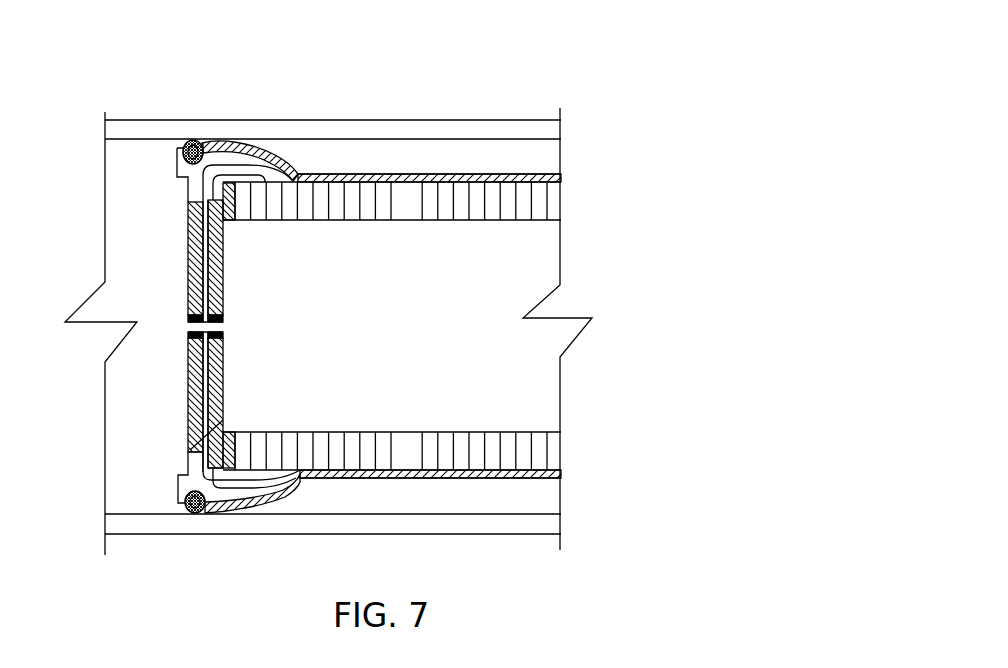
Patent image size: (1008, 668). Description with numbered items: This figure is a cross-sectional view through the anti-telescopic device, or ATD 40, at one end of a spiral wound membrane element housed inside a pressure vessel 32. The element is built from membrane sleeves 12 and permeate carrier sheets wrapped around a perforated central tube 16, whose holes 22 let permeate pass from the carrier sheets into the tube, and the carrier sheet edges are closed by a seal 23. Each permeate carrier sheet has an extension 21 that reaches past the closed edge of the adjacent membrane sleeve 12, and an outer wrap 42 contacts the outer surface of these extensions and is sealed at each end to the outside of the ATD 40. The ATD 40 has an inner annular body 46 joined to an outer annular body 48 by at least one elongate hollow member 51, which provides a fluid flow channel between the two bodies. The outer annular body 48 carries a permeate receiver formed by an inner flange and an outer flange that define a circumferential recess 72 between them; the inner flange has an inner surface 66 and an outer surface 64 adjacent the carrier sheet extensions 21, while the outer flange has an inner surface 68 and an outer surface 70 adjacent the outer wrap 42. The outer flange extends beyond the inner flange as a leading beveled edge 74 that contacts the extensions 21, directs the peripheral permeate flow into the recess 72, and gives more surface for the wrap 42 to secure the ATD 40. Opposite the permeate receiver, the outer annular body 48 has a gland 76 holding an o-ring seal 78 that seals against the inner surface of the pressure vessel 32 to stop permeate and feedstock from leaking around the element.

The membrane sleeve 12 is at (401, 319).
The central tube 16 is at (186, 335).
The permeate carrier sheet extension 21 is at (415, 212).
The holes 22 is at (204, 310).
The seal 23 is at (222, 195).
The pressure vessel 32 is at (517, 125).
The anti-telescopic device (ATD) 40 is at (166, 437).
The outer wrap 42 is at (445, 176).
The inner annular body 46 is at (186, 342).
The outer annular body 48 is at (196, 474).
The elongate hollow member 51 is at (187, 378).
The outer surface of inner flange 64 is at (225, 178).
The inner surface of inner flange 66 is at (243, 183).
The inner surface of outer flange 68 is at (275, 153).
The outer surface of outer flange 70 is at (258, 160).
The recess 72 is at (233, 478).
The leading beveled edge 74 is at (292, 170).
The gland 76 is at (179, 144).
The seal 78 is at (194, 140).